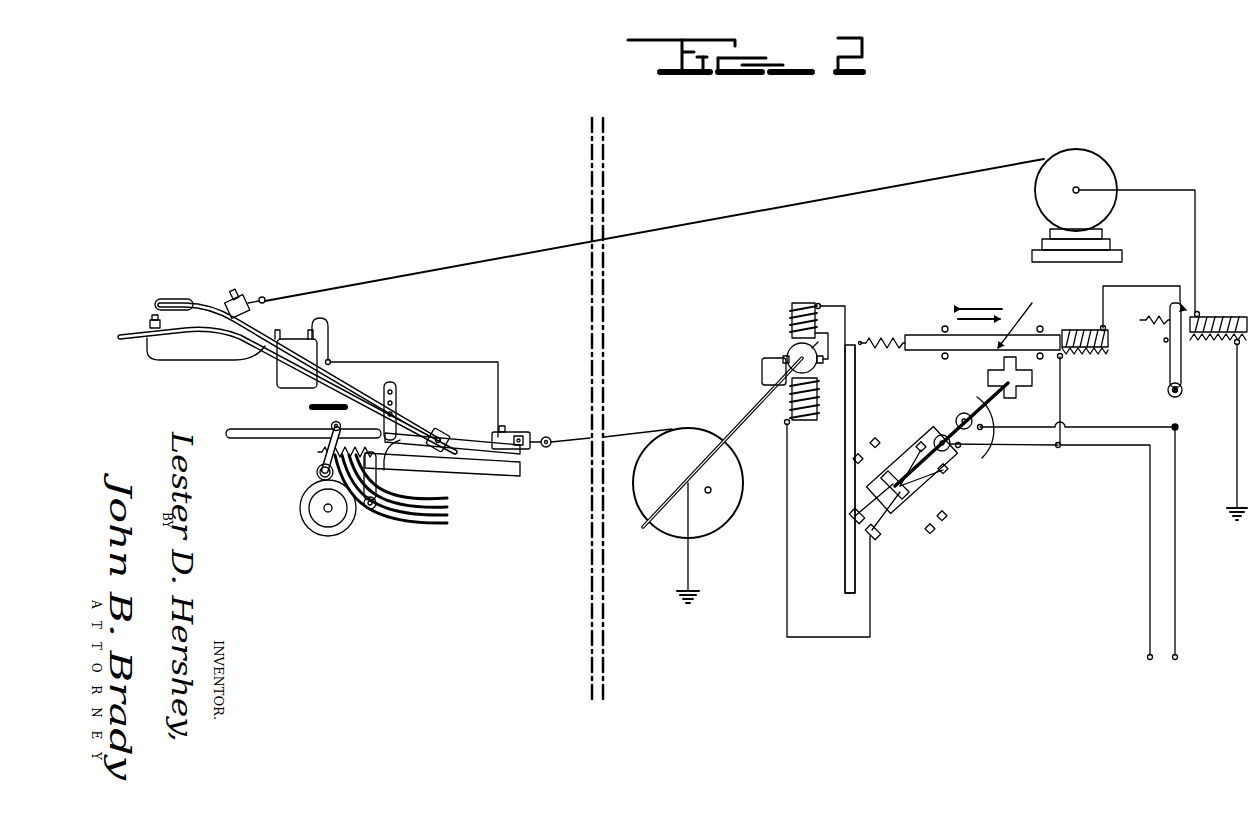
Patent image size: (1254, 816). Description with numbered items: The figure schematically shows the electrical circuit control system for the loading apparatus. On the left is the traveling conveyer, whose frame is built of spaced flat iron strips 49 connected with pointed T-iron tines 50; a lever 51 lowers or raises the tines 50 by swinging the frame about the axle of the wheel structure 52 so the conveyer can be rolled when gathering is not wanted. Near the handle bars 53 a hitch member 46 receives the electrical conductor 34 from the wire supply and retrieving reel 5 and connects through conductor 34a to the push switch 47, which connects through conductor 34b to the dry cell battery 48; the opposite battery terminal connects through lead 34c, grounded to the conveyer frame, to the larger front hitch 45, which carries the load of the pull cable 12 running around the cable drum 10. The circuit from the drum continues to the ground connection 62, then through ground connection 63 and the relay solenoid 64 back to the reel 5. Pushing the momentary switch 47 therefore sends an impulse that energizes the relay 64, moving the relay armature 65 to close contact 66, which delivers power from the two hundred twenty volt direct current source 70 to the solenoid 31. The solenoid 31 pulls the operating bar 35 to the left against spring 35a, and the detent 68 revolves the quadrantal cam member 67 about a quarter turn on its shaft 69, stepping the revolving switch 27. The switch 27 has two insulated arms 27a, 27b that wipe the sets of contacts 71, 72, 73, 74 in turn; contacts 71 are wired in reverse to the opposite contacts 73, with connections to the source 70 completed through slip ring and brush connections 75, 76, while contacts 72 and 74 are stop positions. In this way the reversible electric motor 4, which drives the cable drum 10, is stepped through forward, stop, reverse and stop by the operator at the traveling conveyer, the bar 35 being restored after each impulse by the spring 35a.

The reversible electric motor 4 is at (808, 300).
The wire supply and retrieving reel 5 is at (1092, 172).
The cable drum 10 is at (728, 508).
The pull cable 12 is at (565, 445).
The revolving switch 27 is at (905, 540).
The switch arm 27a is at (876, 497).
The switch arm 27b is at (893, 548).
The solenoid 31 is at (1076, 350).
The electrical conductor 34 is at (426, 274).
The conductor 34a is at (190, 300).
The conductor 34b is at (212, 363).
The lead 34c is at (432, 358).
The operating bar 35 is at (925, 330).
The spring 35a is at (900, 335).
The hitch 45 is at (516, 434).
The hitch member 46 is at (234, 293).
The push switch 47 is at (152, 317).
The dry cell battery 48 is at (300, 330).
The flat iron strips 49 is at (452, 440).
The tines 50 is at (490, 528).
The lever 51 is at (270, 439).
The wheel structure 52 is at (333, 541).
The handle bars 53 is at (175, 297).
The ground connection 62 is at (696, 590).
The ground connection 63 is at (1232, 496).
The relay solenoid 64 is at (1206, 316).
The relay armature 65 is at (1170, 364).
The contact 66 is at (1144, 293).
The quadrantal cam member 67 is at (1018, 392).
The detent 68 is at (1029, 315).
The shaft 69 is at (1002, 439).
The 220 D. C. volt source 70 is at (1154, 586).
The sets of contacts 71 is at (870, 535).
The sets of contacts 72 is at (866, 454).
The sets of contacts 73 is at (947, 472).
The sets of contacts 74 is at (948, 520).
The slip ring and brush connections 75 is at (937, 437).
The slip ring and brush connections 76 is at (961, 414).